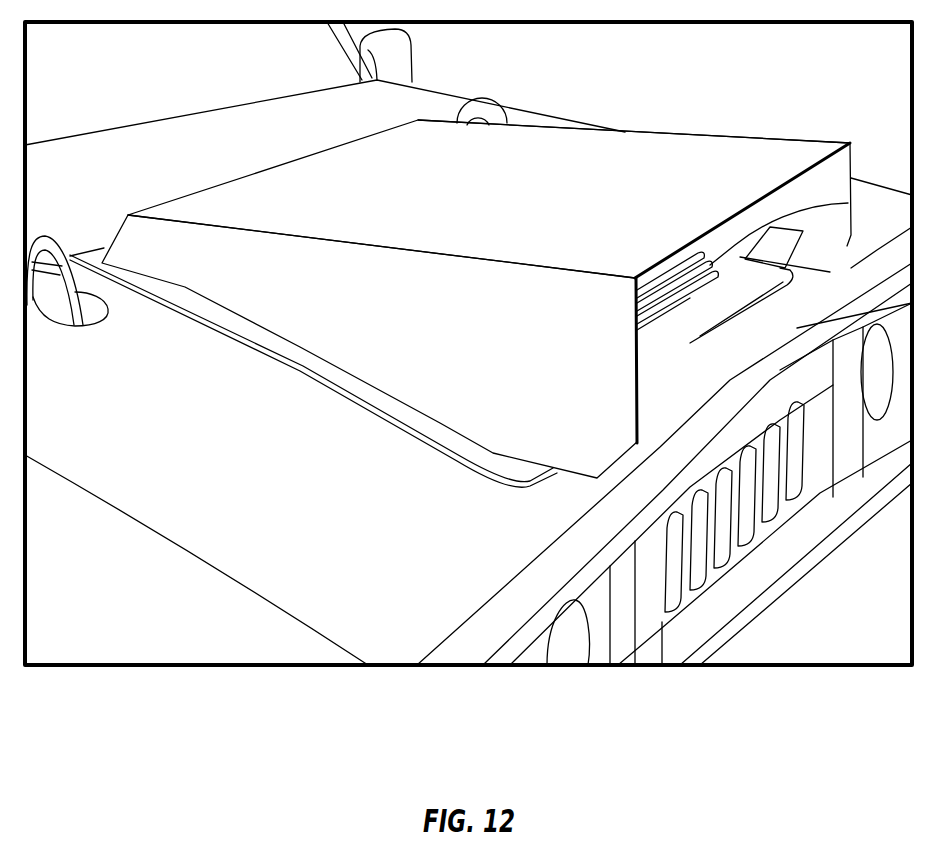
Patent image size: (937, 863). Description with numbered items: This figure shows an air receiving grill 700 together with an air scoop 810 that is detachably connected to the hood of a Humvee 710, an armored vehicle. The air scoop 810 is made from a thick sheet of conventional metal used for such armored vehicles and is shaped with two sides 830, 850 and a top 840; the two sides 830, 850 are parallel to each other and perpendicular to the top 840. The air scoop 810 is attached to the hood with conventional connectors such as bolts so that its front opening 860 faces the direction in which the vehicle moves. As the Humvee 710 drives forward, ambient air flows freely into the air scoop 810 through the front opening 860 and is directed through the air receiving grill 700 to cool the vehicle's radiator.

The air receiving grill 700 is at (848, 207).
The Humvee 710 is at (150, 165).
The air scoop 810 is at (476, 289).
The side 830 is at (485, 407).
The top 840 is at (617, 192).
The side 850 is at (660, 130).
The front opening 860 is at (747, 341).